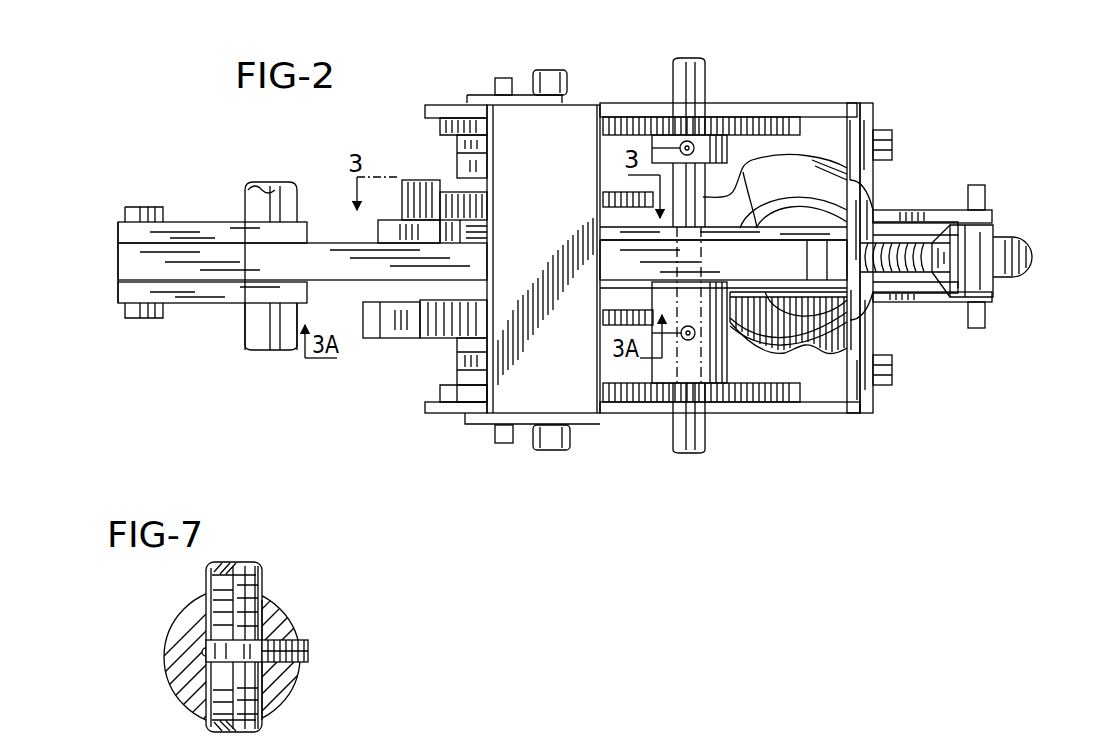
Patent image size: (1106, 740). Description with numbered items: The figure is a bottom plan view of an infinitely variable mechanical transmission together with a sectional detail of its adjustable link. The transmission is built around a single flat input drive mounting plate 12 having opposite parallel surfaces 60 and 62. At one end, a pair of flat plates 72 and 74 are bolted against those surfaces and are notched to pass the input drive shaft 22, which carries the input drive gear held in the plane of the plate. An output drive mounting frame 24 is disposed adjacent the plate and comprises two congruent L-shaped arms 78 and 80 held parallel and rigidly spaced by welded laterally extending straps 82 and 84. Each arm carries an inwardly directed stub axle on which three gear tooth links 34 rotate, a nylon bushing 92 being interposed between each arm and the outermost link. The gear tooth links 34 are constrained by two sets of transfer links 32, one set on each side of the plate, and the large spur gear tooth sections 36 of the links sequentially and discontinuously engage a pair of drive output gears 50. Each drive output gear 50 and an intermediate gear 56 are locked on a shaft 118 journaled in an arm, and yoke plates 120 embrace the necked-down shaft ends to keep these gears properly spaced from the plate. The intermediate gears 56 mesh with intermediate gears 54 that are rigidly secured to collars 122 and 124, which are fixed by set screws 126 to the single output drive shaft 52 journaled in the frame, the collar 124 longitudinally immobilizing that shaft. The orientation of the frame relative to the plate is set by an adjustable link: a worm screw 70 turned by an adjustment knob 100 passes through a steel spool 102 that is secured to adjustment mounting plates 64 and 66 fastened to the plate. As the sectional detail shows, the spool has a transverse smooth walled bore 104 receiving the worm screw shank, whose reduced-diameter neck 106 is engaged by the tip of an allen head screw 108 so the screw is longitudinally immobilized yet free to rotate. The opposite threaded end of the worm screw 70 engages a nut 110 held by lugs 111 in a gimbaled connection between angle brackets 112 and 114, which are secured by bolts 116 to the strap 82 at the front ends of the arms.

In FIG. 2, the input drive mounting plate 12 is at (112, 262).
In FIG. 2, the input drive shaft 22 is at (275, 188).
In FIG. 2, the output drive mounting frame 24 is at (855, 415).
In FIG. 2, the transfer links 32 is at (378, 230).
In FIG. 2, the gear tooth links 34 is at (455, 165).
In FIG. 2, the gear tooth sections 36 is at (412, 195).
In FIG. 2, the drive output gears 50 is at (603, 200).
In FIG. 2, the output drive shaft 52 is at (698, 85).
In FIG. 2, the intermediate gears 54 is at (770, 117).
In FIG. 2, the intermediate gears 56 is at (628, 117).
In FIG. 2, the surface 60 is at (322, 243).
In FIG. 2, the surface 62 is at (320, 295).
In FIG. 2, the adjustment mounting plate 64 is at (765, 175).
In FIG. 2, the adjustment mounting plate 66 is at (742, 383).
In FIG. 2, the worm screw 70 is at (1022, 262).
In FIG. 7, the worm screw 70 is at (265, 577).
In FIG. 2, the flat plate 72 is at (208, 222).
In FIG. 2, the flat plate 74 is at (217, 303).
In FIG. 2, the arm 78 is at (605, 103).
In FIG. 2, the arm 80 is at (828, 413).
In FIG. 2, the strap 82 is at (862, 190).
In FIG. 2, the strap 84 is at (548, 236).
In FIG. 2, the nylon bushing 92 is at (430, 410).
In FIG. 2, the adjustment knob 100 is at (805, 182).
In FIG. 2, the steel spool 102 is at (815, 260).
In FIG. 7, the steel spool 102 is at (296, 612).
In FIG. 7, the transverse smooth walled bore 104 is at (203, 652).
In FIG. 7, the neck 106 is at (250, 660).
In FIG. 7, the allen head screw 108 is at (308, 652).
In FIG. 2, the nut 110 is at (995, 235).
In FIG. 2, the lugs 111 is at (985, 197).
In FIG. 2, the angle bracket 112 is at (940, 210).
In FIG. 2, the angle bracket 114 is at (935, 302).
In FIG. 2, the bolts 116 is at (892, 142).
In FIG. 2, the shaft 118 is at (555, 70).
In FIG. 2, the yoke plates 120 is at (510, 85).
In FIG. 2, the collar 122 is at (652, 148).
In FIG. 2, the collar 124 is at (655, 345).
In FIG. 2, the set screws 126 is at (660, 150).